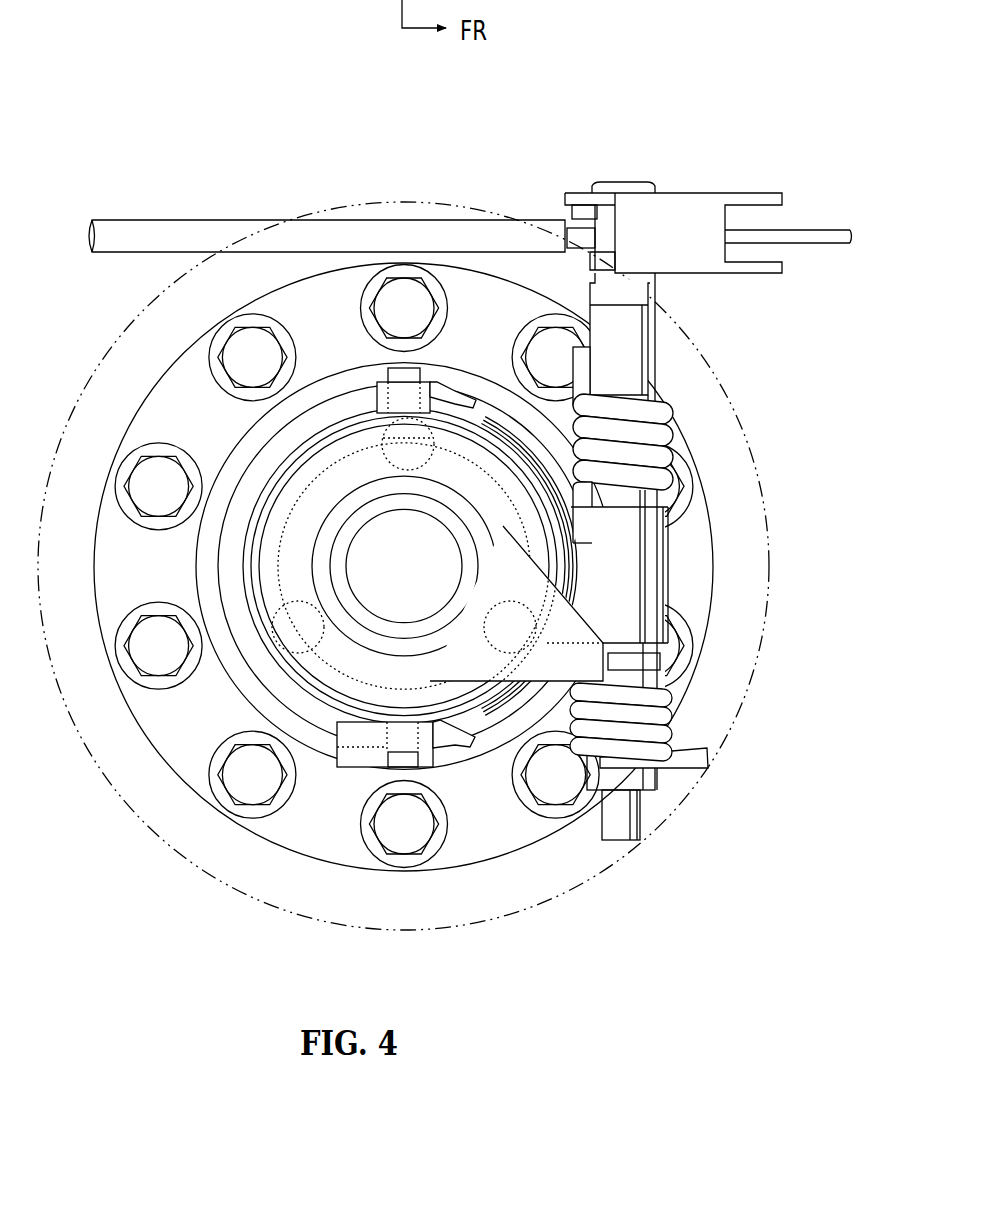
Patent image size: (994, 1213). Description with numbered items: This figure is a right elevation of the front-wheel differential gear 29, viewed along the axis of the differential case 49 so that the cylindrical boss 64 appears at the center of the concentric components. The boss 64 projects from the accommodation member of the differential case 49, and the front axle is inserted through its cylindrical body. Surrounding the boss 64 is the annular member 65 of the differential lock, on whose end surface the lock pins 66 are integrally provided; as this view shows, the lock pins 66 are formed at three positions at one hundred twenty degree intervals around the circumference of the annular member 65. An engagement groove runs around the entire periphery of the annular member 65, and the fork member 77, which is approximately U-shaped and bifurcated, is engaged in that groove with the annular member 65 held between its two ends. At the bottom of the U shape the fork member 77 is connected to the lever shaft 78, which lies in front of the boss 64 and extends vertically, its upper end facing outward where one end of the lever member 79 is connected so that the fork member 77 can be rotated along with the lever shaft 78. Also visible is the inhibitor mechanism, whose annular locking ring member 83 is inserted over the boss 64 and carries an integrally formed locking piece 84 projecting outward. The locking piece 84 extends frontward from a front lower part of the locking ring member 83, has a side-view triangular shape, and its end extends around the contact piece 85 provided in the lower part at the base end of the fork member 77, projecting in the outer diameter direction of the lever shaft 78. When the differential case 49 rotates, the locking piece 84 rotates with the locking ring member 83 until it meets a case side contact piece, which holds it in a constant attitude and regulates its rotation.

The front-wheel differential gear 29 is at (238, 168).
The differential case 49 is at (173, 740).
The boss 64 is at (368, 622).
The annular member 65 is at (356, 437).
The lock pin 66 is at (247, 588).
The fork member 77 is at (478, 413).
The lever shaft 78 is at (633, 337).
The lever member 79 is at (683, 215).
The locking ring member 83 is at (432, 670).
The locking piece 84 is at (575, 628).
The contact piece 85 is at (663, 660).